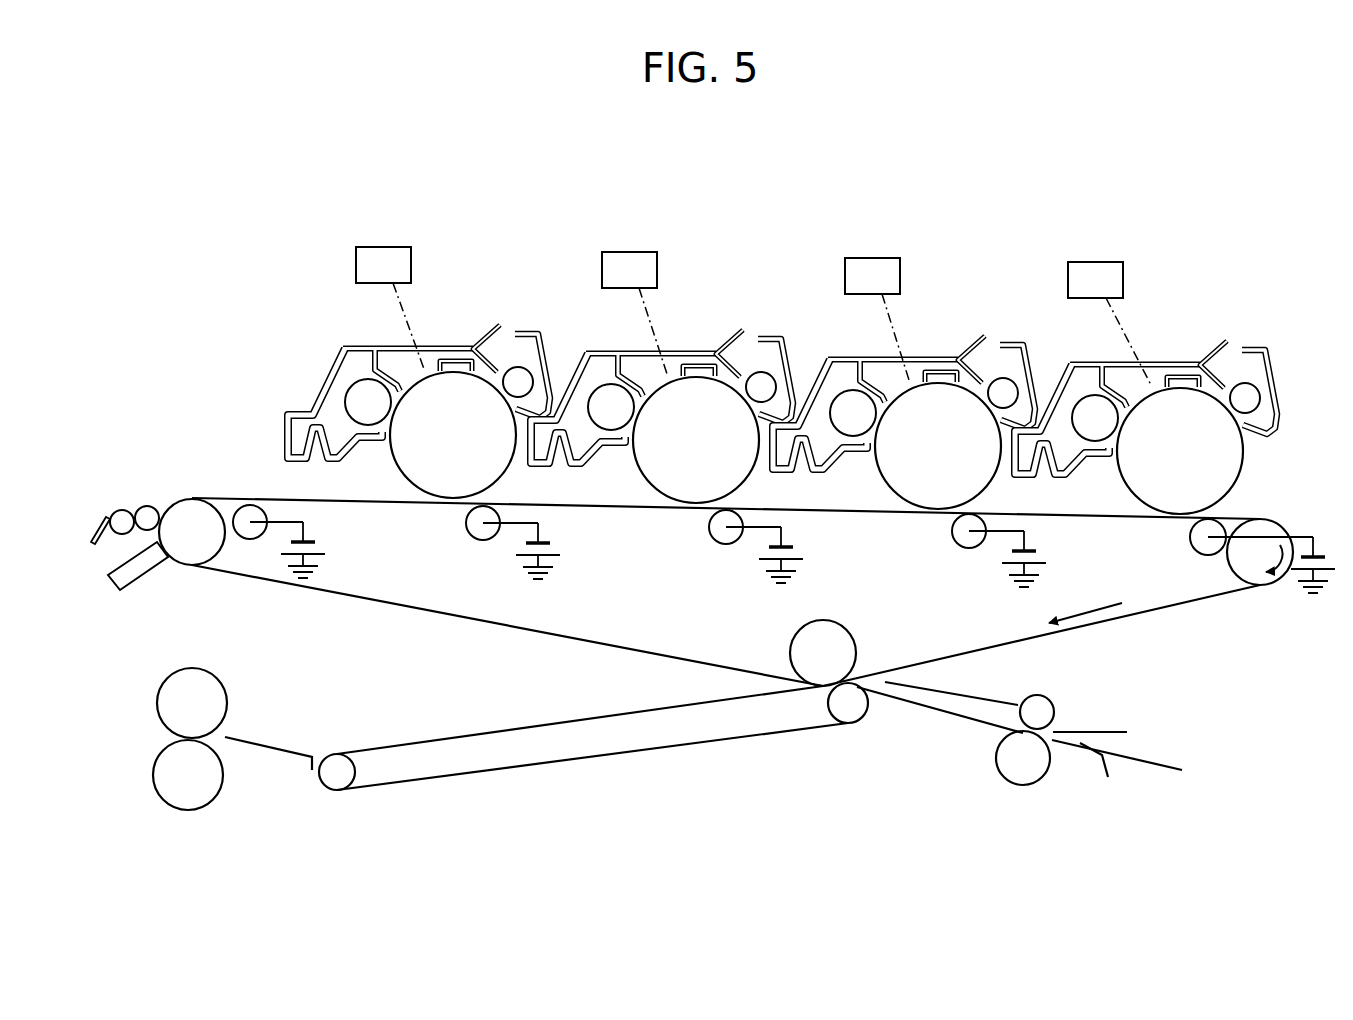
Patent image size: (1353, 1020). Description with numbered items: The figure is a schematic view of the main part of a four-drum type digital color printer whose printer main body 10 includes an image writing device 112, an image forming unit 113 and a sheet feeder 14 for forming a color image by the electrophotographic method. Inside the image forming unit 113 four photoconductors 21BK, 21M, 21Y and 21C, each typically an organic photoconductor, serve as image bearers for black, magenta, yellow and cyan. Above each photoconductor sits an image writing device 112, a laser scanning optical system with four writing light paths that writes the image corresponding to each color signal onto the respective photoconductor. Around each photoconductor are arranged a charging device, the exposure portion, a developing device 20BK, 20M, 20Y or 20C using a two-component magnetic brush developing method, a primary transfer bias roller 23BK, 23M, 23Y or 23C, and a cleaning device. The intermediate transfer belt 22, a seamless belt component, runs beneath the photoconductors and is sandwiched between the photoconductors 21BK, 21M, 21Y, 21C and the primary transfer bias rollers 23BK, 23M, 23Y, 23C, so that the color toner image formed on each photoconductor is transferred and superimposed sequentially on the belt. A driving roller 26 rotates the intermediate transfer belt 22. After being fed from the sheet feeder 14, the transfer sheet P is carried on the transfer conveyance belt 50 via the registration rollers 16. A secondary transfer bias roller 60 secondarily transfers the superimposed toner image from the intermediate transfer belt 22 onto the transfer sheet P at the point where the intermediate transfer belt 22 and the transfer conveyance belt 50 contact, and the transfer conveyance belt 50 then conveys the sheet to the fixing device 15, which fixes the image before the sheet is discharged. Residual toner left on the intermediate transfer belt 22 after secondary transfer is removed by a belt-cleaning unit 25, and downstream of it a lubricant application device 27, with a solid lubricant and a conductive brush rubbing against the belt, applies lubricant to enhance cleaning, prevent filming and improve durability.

The printer main body 10 is at (242, 362).
The image writing device 112 is at (381, 259).
The image forming unit 113 is at (526, 312).
The developing device for cyan 20C is at (357, 352).
The developing device for yellow 20Y is at (600, 357).
The developing device for magenta 20M is at (842, 363).
The developing device for black 20BK is at (1084, 368).
The photoconductor for cyan 21C is at (431, 448).
The photoconductor for yellow 21Y is at (674, 453).
The photoconductor for magenta 21M is at (915, 459).
The photoconductor for black 21BK is at (1152, 464).
The intermediate transfer belt 22 is at (1160, 612).
The primary transfer bias roller for cyan 23C is at (470, 538).
The primary transfer bias roller for yellow 23Y is at (713, 542).
The primary transfer bias roller for magenta 23M is at (956, 546).
The primary transfer bias roller for black 23BK is at (1193, 548).
The belt-cleaning unit 25 is at (113, 582).
The driving roller 26 is at (193, 498).
The lubricant application device 27 is at (129, 507).
The secondary transfer bias roller 60 is at (870, 712).
The transfer conveyance belt 50 is at (592, 770).
The fixing device 15 is at (236, 771).
The registration rollers 16 is at (1015, 786).
The sheet feeder 14 is at (1120, 776).
The transfer sheet P is at (1163, 765).